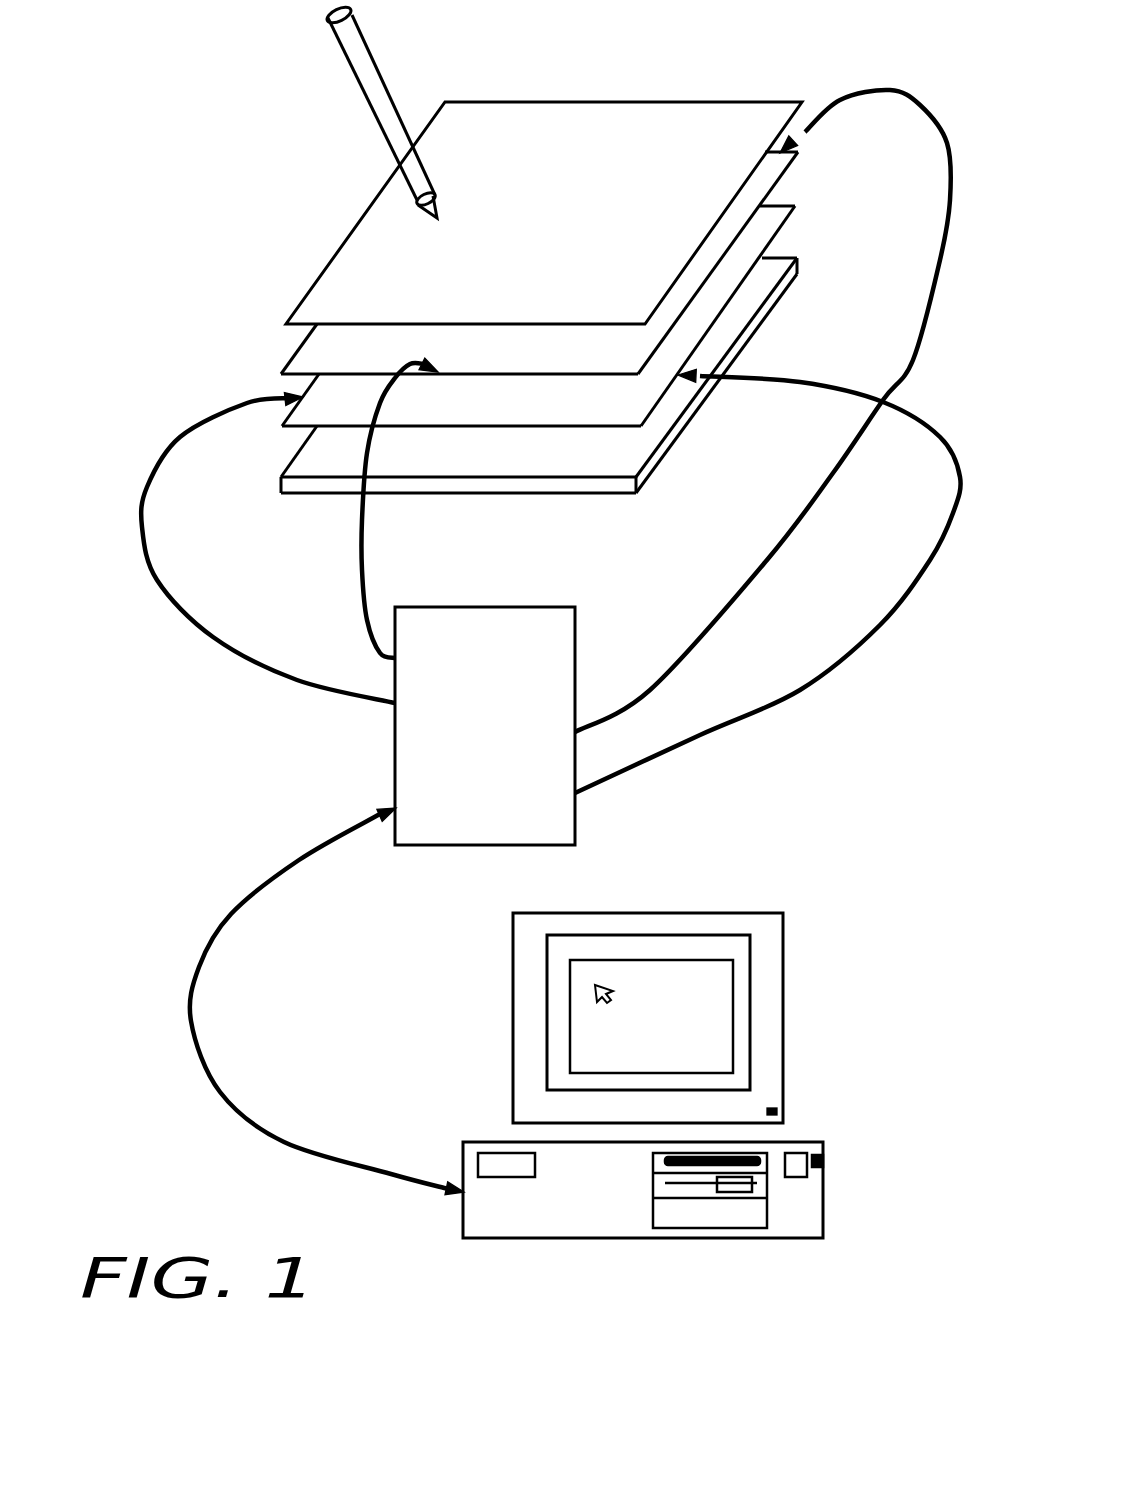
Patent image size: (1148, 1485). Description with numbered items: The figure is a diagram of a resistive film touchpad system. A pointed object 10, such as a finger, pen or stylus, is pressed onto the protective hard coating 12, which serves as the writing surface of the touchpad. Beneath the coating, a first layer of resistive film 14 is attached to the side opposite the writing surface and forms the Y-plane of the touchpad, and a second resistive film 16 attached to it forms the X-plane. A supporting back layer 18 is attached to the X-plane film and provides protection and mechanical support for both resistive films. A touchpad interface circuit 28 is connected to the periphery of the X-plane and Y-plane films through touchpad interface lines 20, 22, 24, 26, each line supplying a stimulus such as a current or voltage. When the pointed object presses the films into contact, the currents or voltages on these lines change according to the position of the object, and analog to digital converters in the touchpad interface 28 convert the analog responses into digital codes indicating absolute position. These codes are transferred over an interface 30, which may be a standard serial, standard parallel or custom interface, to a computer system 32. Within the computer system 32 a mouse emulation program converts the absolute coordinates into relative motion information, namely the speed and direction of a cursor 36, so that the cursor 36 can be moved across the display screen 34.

The pointed object 10 is at (367, 85).
The protective hard coating 12 is at (364, 221).
The Y-plane resistive film 14 is at (305, 346).
The X-plane resistive film 16 is at (778, 217).
The supporting back layer 18 is at (650, 473).
The touchpad interface line 20 is at (360, 563).
The touchpad interface line 22 is at (947, 137).
The touchpad interface line 24 is at (173, 445).
The touchpad interface line 26 is at (805, 385).
The touchpad interface circuit 28 is at (575, 812).
The interface 30 is at (266, 890).
The computer system 32 is at (459, 1214).
The display screen 34 is at (513, 1018).
The cursor 36 is at (613, 992).